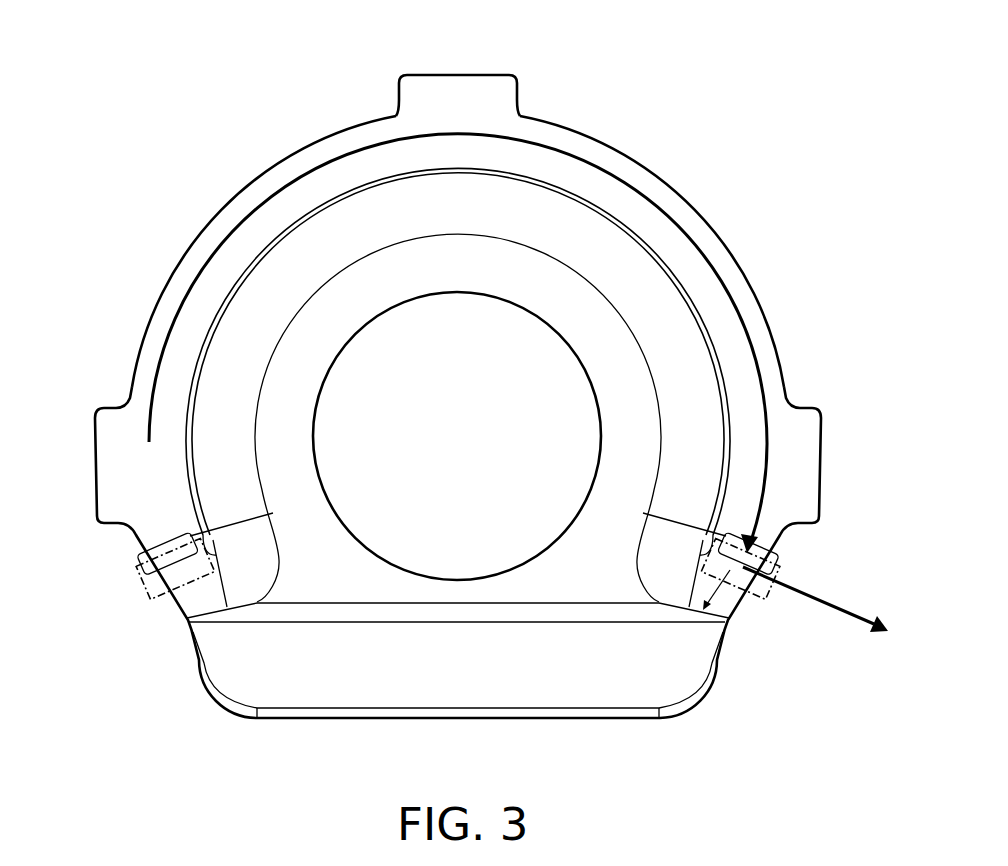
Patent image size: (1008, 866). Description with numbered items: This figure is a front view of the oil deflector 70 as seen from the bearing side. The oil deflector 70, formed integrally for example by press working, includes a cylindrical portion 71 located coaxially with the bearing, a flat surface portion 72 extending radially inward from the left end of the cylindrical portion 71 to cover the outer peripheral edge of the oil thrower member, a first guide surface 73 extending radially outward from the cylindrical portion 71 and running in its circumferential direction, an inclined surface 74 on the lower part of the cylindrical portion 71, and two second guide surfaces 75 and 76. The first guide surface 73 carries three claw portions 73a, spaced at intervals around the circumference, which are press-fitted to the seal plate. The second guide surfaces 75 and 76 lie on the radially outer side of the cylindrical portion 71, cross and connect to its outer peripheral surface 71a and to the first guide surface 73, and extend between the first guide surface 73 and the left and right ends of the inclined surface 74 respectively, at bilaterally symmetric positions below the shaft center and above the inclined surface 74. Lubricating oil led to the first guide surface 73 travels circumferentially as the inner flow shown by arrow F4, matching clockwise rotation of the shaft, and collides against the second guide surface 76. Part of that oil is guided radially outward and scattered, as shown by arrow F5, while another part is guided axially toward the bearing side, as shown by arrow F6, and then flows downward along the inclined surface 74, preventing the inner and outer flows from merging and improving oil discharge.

The oil deflector 70 is at (138, 108).
The cylindrical portion 71 is at (667, 268).
The outer peripheral surface 71a is at (707, 338).
The flat surface portion 72 is at (355, 277).
The first guide surface 73 is at (635, 175).
The claw portions 73a is at (460, 93).
The inclined surface 74 is at (458, 683).
The second guide surface 75 is at (140, 580).
The second guide surface 76 is at (780, 565).
The arrow F4 is at (175, 317).
The arrow F5 is at (840, 613).
The arrow F6 is at (717, 590).